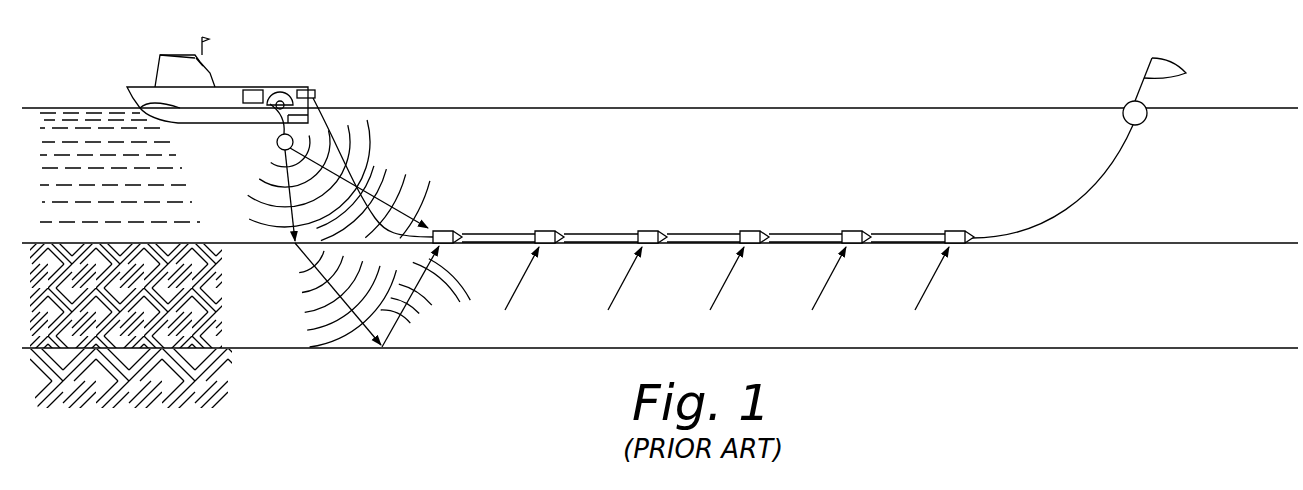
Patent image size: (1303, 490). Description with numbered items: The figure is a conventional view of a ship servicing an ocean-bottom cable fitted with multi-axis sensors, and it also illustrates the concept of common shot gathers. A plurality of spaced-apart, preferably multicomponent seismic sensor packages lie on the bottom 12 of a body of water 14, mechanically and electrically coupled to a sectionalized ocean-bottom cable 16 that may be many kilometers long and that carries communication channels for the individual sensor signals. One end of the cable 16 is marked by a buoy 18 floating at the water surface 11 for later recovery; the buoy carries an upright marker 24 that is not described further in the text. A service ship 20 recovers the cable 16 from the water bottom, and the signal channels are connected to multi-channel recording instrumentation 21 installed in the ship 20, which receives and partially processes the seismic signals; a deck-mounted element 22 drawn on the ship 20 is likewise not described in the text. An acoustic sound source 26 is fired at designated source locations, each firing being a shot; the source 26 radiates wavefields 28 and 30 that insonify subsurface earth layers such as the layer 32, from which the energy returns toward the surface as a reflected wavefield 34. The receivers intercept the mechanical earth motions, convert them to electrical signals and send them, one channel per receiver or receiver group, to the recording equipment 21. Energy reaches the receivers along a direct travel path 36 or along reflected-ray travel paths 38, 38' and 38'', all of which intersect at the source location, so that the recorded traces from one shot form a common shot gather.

The water surface 11 is at (1259, 105).
The water bottom 12 is at (1259, 240).
The body of water 14 is at (832, 148).
The ocean-bottom cable 16 is at (610, 231).
The buoy 18 is at (1143, 126).
The service ship 20 is at (137, 85).
The multi-channel recording instrumentation 21 is at (255, 95).
The antenna 22 is at (206, 64).
The marker flag 24 is at (1148, 63).
The acoustic sound source 26 is at (276, 141).
The wavefield 28 is at (447, 150).
The wavefield 30 is at (460, 311).
The subsurface earth layer 32 is at (1259, 346).
The reflected wavefield 34 is at (427, 270).
The direct travel path 36 is at (339, 180).
The reflected-ray travel path 38 is at (327, 248).
The reflected-ray travel path 38' is at (545, 278).
The reflected-ray travel path 38'' is at (778, 278).